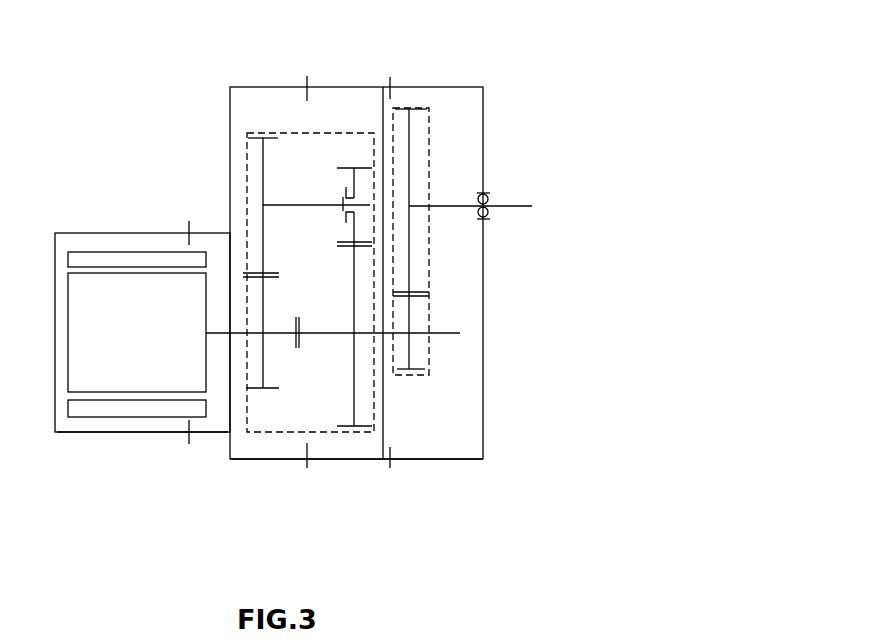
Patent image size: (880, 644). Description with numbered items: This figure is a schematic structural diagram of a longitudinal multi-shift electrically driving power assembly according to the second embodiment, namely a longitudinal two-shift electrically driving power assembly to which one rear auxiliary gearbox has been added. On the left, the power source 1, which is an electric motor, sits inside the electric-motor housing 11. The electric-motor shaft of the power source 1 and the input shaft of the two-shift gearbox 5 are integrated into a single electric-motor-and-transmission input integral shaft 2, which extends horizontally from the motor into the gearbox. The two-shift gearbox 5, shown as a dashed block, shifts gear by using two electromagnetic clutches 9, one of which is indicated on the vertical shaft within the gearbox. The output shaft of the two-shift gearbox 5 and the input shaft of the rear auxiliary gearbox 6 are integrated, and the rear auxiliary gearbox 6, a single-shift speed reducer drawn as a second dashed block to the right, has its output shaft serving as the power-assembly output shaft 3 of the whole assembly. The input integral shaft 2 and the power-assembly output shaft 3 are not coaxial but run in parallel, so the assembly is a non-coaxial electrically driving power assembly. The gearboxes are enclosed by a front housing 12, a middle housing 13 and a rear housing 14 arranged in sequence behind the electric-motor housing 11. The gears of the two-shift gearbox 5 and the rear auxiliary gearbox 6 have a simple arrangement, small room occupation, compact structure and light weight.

The power source 1 is at (122, 332).
The electric-motor housing 11 is at (150, 432).
The electric-motor-and-transmission input integral shaft 2 is at (247, 333).
The two-shift gearbox 5 is at (277, 133).
The electromagnetic clutches 9 is at (343, 204).
The front housing 12 is at (297, 348).
The rear auxiliary gearbox 6 is at (402, 108).
The power-assembly output shaft 3 is at (523, 205).
The middle housing 13 is at (345, 460).
The rear housing 14 is at (450, 459).